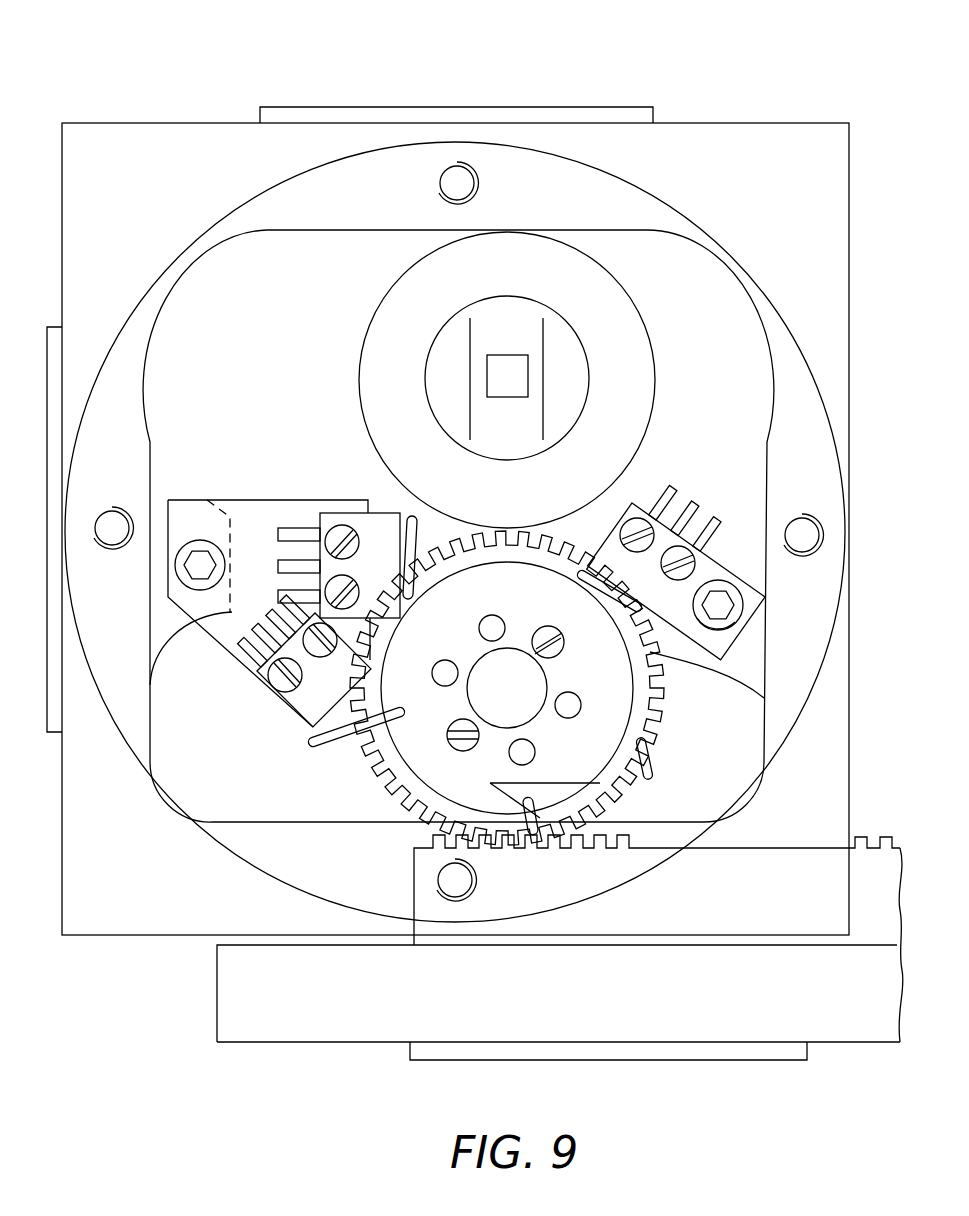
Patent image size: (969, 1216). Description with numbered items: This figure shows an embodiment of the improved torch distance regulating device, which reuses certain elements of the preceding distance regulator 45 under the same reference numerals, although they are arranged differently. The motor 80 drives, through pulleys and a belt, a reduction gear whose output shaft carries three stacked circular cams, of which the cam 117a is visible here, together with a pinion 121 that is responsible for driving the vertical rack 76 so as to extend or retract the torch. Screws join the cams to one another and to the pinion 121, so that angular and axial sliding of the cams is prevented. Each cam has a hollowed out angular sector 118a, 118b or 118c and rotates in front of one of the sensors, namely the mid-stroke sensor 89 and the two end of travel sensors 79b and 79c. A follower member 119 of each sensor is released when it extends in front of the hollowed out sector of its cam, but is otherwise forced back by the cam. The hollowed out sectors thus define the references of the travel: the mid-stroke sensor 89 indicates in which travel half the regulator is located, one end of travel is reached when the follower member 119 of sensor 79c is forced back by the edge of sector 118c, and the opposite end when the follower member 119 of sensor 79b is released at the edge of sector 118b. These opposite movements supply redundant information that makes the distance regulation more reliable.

The distance regulator 45 is at (728, 118).
The vertical rack 76 is at (888, 848).
The motor 80 is at (380, 353).
The mid-stroke sensor 89 is at (385, 505).
The end of travel sensor 79b is at (660, 487).
The end of travel sensor 79c is at (293, 718).
The pinion 121 is at (515, 530).
The follower member 119 is at (645, 650).
The hollowed out angular sector 118a is at (345, 738).
The hollowed out angular sector 118b is at (532, 832).
The hollowed out angular sector 118c is at (650, 776).
The circular cam 117a is at (413, 820).